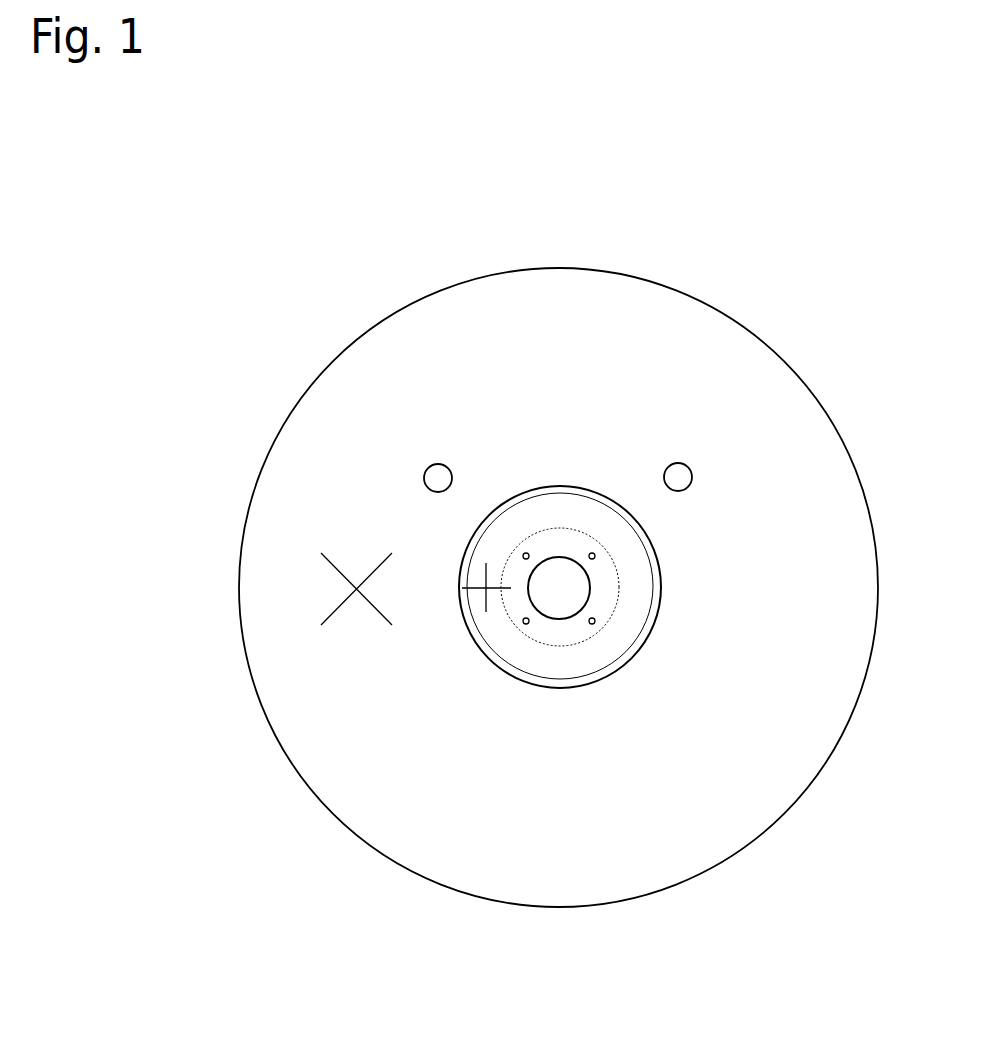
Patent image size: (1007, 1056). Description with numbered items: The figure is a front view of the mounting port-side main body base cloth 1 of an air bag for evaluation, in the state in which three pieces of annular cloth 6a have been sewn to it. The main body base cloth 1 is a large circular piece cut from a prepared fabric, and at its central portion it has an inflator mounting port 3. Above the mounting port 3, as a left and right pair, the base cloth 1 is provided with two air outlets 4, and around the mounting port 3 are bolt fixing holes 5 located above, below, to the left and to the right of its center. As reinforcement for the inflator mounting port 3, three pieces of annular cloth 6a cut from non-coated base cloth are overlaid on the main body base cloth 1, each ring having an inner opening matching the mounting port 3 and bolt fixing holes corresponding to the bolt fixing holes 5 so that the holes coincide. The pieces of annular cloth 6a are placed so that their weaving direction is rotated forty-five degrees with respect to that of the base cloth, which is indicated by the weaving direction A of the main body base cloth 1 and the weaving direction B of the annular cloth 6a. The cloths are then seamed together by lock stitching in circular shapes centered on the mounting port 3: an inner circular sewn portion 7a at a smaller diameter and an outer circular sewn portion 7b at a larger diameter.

The mounting port-side main body base cloth 1 is at (551, 373).
The inflator mounting port 3 is at (557, 592).
The air outlet 4 is at (677, 460).
The bolt fixing hole 5 is at (598, 621).
The annular cloth 6a is at (652, 540).
The sewn portion 7a is at (550, 648).
The sewn portion 7b is at (478, 632).
The weaving direction of main body base cloth 1 A is at (358, 563).
The weaving direction of annular cloth 6a B is at (487, 552).